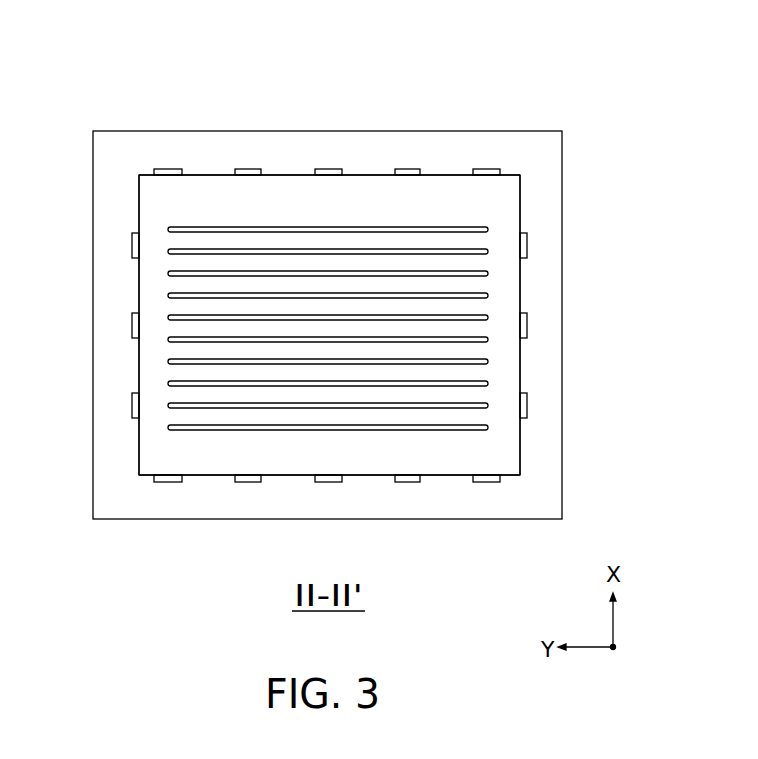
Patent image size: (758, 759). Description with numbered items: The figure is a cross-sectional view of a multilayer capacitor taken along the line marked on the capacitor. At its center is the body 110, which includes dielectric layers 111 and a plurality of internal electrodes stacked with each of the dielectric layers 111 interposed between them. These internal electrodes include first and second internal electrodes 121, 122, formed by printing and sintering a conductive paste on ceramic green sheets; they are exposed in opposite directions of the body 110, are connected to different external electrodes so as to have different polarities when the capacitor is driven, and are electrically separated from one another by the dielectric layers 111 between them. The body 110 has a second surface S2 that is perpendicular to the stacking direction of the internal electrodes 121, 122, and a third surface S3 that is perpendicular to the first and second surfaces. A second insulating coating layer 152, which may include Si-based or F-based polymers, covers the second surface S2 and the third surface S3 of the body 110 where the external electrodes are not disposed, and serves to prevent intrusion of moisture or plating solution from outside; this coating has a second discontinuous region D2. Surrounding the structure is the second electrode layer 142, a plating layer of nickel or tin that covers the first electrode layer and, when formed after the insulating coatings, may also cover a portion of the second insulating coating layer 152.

The body 110 is at (270, 175).
The dielectric layers 111 is at (470, 240).
The first internal electrode 121 is at (375, 229).
The second internal electrode 122 is at (427, 251).
The second electrode layer 142 is at (543, 277).
The second insulating coating layer 152 is at (487, 171).
The second surface S2 is at (228, 175).
The third surface S3 is at (138, 383).
The second discontinuous region D2 is at (309, 172).